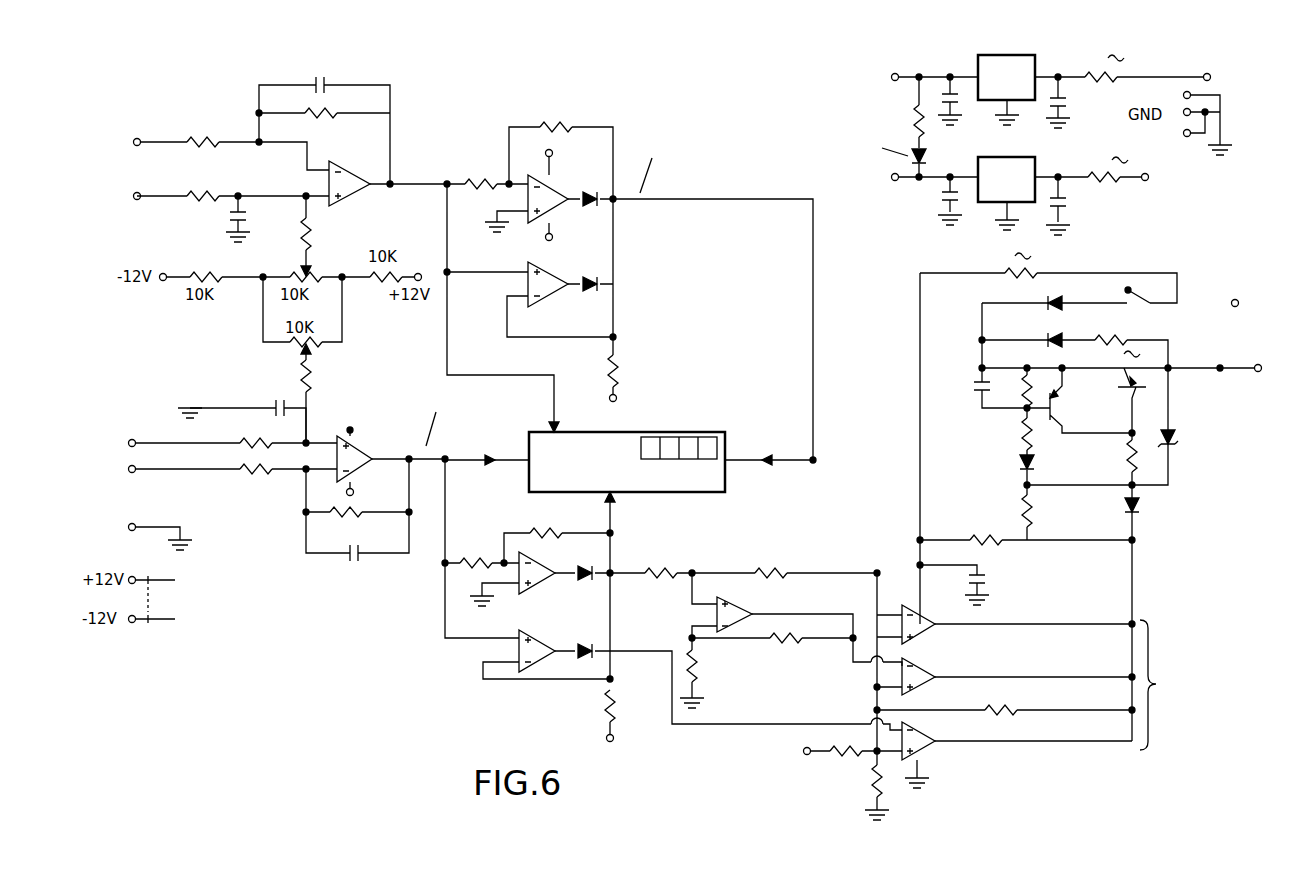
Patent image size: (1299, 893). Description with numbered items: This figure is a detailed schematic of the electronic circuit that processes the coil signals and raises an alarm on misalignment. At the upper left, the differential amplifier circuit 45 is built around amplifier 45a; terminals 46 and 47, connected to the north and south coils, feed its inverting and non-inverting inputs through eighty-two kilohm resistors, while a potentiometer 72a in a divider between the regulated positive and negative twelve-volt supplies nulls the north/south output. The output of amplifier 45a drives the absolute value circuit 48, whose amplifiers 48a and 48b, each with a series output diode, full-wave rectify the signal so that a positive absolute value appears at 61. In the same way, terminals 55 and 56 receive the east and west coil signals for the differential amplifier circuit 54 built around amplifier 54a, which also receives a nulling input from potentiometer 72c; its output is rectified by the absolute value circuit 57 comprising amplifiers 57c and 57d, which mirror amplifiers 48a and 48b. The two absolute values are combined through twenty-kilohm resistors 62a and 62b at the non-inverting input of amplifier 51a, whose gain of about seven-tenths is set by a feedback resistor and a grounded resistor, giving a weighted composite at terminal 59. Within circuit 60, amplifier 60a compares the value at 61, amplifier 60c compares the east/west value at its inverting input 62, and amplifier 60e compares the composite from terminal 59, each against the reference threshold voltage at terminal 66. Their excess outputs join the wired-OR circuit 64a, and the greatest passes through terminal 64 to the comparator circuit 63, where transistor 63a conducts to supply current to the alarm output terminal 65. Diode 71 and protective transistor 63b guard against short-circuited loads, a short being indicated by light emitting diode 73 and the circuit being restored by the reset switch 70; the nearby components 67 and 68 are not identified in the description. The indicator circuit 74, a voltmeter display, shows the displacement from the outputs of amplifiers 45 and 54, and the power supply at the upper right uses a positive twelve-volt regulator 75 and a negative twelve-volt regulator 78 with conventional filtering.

The differential amplifier circuit 45 is at (410, 135).
The amplifier 45a is at (352, 200).
The terminal 46 is at (137, 138).
The terminal 47 is at (137, 200).
The absolute value circuit 48 is at (630, 272).
The amplifier 48a is at (560, 190).
The amplifier 48b is at (548, 296).
The amplifier 51a is at (726, 598).
The differential amplifier circuit 54 is at (295, 508).
The amplifier 54a is at (336, 434).
The terminal 55 is at (132, 439).
The terminal 56 is at (132, 473).
The absolute value circuit 57 is at (621, 600).
The amplifier 57c is at (545, 586).
The amplifier 57d is at (540, 640).
The terminal 59 is at (852, 662).
The circuit 60 is at (947, 695).
The amplifier 60a is at (925, 632).
The amplifier 60e is at (925, 665).
The amplifier 60c is at (925, 730).
The output of absolute value circuit 61 is at (813, 333).
The inverting input terminal 62 is at (757, 724).
The 20 k ohm resistor 62a is at (773, 562).
The 20 k ohm resistor 62b is at (672, 598).
The comparator circuit 63 is at (1163, 415).
The transistor 63a is at (1146, 387).
The protective transistor 63b is at (1050, 440).
The terminal 64 is at (1132, 590).
The wired-OR circuit 64a is at (1168, 685).
The alarm output terminal 65 is at (1256, 366).
The terminal 66 is at (888, 772).
The fault indicator LED (red) 67 is at (1152, 496).
The resistor 68 is at (1000, 551).
The reset switch 70 is at (1144, 299).
The diode 71 is at (1170, 438).
The potentiometer 72a is at (304, 264).
The potentiometer 72c is at (298, 351).
The short indicator LED (red) 73 is at (1018, 474).
The indicator circuit 74 is at (668, 432).
The positive 12-volt regulator 75 is at (1006, 115).
The negative 12-volt regulator 78 is at (1034, 156).